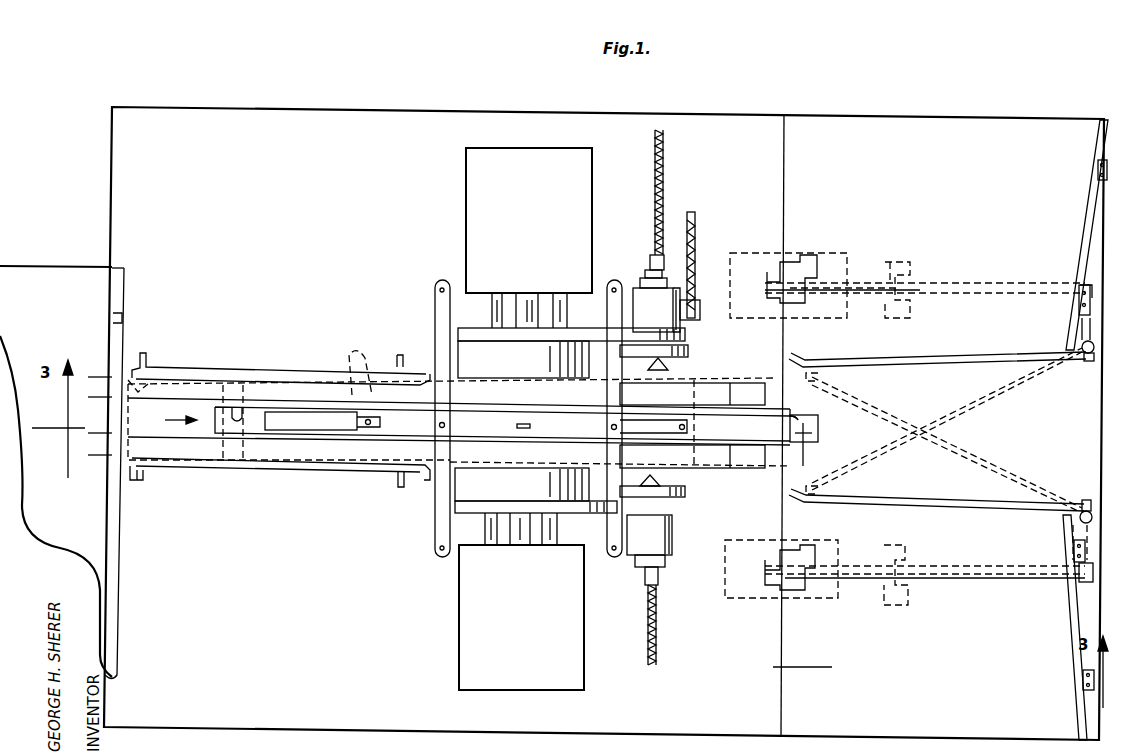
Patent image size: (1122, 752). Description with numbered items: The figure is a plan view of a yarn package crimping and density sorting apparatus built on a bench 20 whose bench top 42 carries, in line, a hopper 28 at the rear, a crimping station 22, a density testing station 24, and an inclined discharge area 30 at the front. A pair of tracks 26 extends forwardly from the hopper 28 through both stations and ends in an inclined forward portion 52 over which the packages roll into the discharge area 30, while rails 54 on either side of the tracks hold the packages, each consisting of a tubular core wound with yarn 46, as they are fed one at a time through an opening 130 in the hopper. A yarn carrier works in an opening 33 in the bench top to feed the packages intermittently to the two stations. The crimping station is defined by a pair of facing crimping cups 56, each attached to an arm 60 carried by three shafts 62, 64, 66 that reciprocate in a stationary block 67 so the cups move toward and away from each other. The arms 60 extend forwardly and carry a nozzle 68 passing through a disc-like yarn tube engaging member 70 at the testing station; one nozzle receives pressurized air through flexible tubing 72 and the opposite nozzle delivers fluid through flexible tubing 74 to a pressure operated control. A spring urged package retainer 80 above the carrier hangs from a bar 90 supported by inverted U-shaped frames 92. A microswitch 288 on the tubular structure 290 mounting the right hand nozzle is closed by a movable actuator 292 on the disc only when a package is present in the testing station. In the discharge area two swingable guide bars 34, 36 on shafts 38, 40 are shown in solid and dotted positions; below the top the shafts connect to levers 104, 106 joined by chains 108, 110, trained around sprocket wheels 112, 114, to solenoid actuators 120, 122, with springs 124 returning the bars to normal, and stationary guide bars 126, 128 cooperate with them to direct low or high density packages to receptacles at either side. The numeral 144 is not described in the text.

The bench 20 is at (388, 101).
The crimping station 22 is at (470, 390).
The density testing station 24 is at (690, 376).
The tracks 26 is at (278, 386).
The hopper 28 is at (60, 309).
The discharge area 30 is at (984, 232).
The opening 33 is at (240, 405).
The guide bar 34 is at (920, 396).
The guide bar 36 is at (962, 360).
The shaft 38 is at (1086, 508).
The shaft 40 is at (1082, 362).
The bench top 42 is at (320, 214).
The yarn 46 is at (158, 366).
The inclined forward portion 52 is at (748, 468).
The rails 54 is at (208, 370).
The crimping cups 56 is at (522, 368).
The arm 60 is at (585, 328).
The shaft 62 is at (564, 292).
The shaft 64 is at (530, 292).
The shaft 66 is at (498, 292).
The stationary block 67 is at (476, 183).
The nozzle 68 is at (650, 366).
The yarn tube engaging member 70 is at (682, 354).
The flexible tubing 72 is at (664, 168).
The flexible tubing 74 is at (657, 630).
The package retainer 80 is at (330, 440).
The bar 90 is at (366, 430).
The inverted U-shaped frames 92 is at (437, 508).
The lever 104 is at (1075, 533).
The lever 106 is at (1090, 330).
The chain 108 is at (965, 580).
The chain 110 is at (968, 286).
The sprocket wheel 112 is at (918, 284).
The sprocket wheel 114 is at (822, 548).
The solenoid actuator 120 is at (818, 598).
The solenoid actuator 122 is at (840, 322).
The springs 124 is at (1090, 290).
The stationary guide bar 126 is at (1066, 666).
The stationary guide bar 128 is at (1090, 192).
The opening 130 is at (124, 322).
The upper actuator housing 144 is at (820, 278).
The microswitch 288 is at (698, 300).
The tubular structure 290 is at (692, 320).
The movable actuator 292 is at (686, 364).